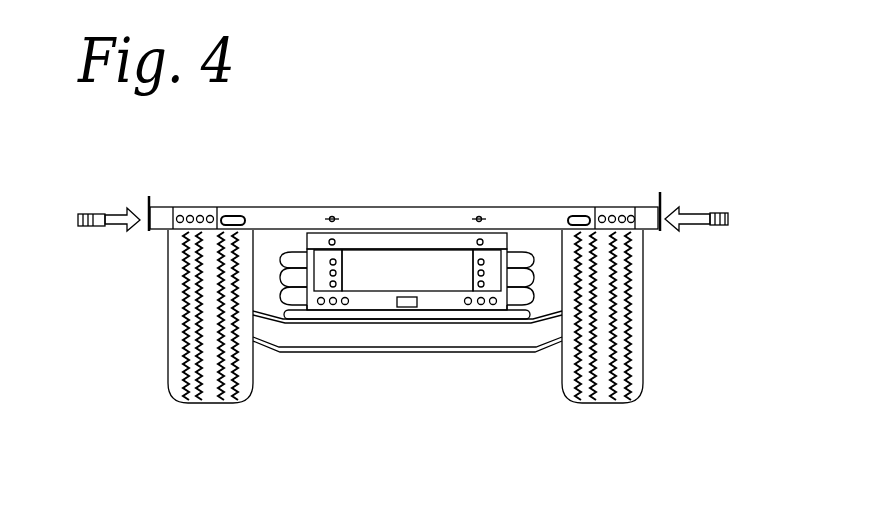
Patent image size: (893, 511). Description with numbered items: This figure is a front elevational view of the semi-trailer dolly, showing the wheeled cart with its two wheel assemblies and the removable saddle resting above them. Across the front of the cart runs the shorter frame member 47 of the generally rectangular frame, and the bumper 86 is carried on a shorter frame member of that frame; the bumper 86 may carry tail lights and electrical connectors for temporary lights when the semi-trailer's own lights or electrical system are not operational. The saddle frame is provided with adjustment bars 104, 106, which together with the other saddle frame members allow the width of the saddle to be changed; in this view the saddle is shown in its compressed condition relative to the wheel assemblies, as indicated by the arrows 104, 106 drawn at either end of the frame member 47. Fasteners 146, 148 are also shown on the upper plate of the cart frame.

The shorter frame member 47 is at (422, 240).
The bumper 86 is at (523, 238).
The adjustment bar 104 is at (113, 221).
The adjustment bar 106 is at (696, 213).
The left fastener 146 is at (331, 240).
The right fastener 148 is at (480, 240).